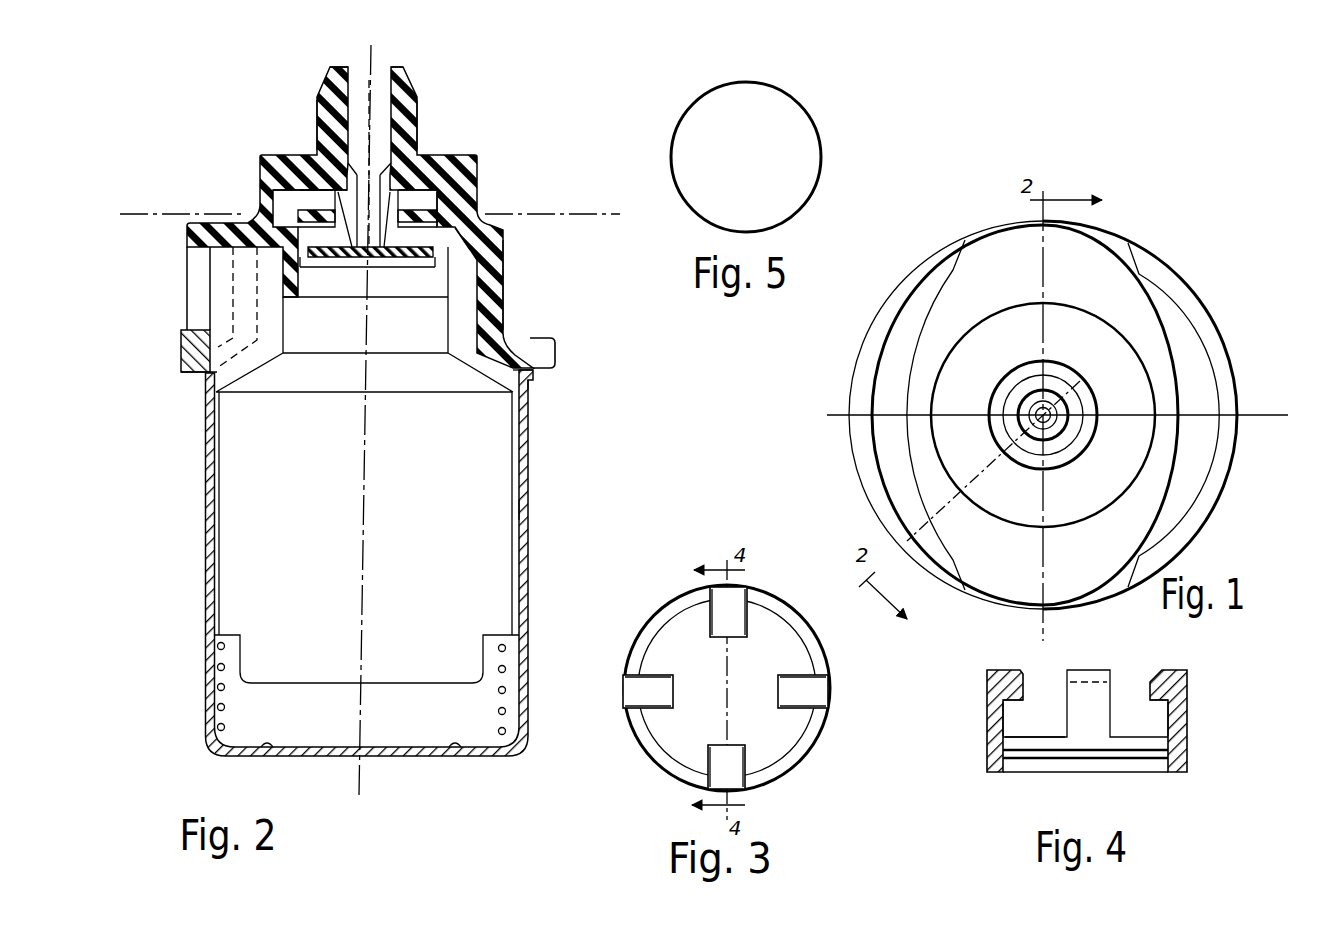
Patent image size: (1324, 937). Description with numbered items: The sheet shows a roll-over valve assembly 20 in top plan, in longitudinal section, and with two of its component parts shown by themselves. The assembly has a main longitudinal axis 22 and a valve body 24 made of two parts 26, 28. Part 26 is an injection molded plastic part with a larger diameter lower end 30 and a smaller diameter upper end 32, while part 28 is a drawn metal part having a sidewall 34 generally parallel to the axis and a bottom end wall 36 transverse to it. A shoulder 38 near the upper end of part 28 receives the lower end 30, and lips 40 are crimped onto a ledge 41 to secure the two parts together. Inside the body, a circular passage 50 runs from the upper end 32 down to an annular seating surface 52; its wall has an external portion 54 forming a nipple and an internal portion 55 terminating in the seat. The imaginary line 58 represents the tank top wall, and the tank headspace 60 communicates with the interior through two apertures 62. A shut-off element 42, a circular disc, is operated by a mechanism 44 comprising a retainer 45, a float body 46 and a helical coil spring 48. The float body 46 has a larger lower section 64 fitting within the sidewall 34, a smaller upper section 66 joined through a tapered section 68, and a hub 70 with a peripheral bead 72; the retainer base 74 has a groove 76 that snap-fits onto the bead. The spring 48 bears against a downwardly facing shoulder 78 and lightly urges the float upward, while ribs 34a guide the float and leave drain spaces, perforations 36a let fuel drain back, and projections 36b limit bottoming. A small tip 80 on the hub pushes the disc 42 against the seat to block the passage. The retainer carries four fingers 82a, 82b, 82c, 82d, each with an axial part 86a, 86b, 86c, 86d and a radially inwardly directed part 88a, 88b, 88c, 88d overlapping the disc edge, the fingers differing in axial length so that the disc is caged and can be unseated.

In FIG. 2, the roll-over valve assembly 20 is at (480, 150).
In FIG. 1, the roll-over valve assembly 20 is at (1218, 295).
In FIG. 2, the main longitudinal axis 22 is at (357, 773).
In FIG. 1, the main longitudinal axis 22 is at (1062, 432).
In FIG. 2, the valve body 24 is at (562, 368).
In FIG. 2, the plastic part 26 is at (505, 267).
In FIG. 2, the metal part 28 is at (528, 544).
In FIG. 2, the lower end 30 is at (177, 363).
In FIG. 2, the upper end 32 is at (407, 93).
In FIG. 1, the upper end 32 is at (1008, 378).
In FIG. 2, the sidewall 34 is at (528, 475).
In FIG. 2, the ribs 34a is at (515, 504).
In FIG. 2, the bottom end wall 36 is at (423, 757).
In FIG. 2, the perforations 36a is at (368, 757).
In FIG. 2, the internal projections 36b is at (263, 743).
In FIG. 2, the shoulder 38 is at (535, 380).
In FIG. 2, the lips 40 is at (548, 338).
In FIG. 1, the lips 40 is at (862, 362).
In FIG. 2, the ledge 41 is at (558, 352).
In FIG. 1, the ledge 41 is at (1112, 247).
In FIG. 2, the shut-off element 42 is at (330, 257).
In FIG. 5, the shut-off element 42 is at (818, 122).
In FIG. 2, the operating mechanism 44 is at (210, 561).
In FIG. 2, the retainer 45 is at (440, 256).
In FIG. 3, the retainer 45 is at (818, 745).
In FIG. 4, the retainer 45 is at (1192, 750).
In FIG. 2, the float body 46 is at (493, 452).
In FIG. 2, the helical coil spring 48 is at (203, 680).
In FIG. 2, the circular passage 50 is at (385, 118).
In FIG. 1, the circular passage 50 is at (1050, 410).
In FIG. 2, the seating surface 52 is at (386, 250).
In FIG. 2, the external portion 54 is at (327, 120).
In FIG. 2, the internal portion 55 is at (403, 200).
In FIG. 2, the top wall line 58 is at (150, 214).
In FIG. 2, the tank headspace 60 is at (182, 307).
In FIG. 2, the apertures 62 is at (197, 297).
In FIG. 2, the lower section 64 is at (235, 472).
In FIG. 2, the upper section 66 is at (408, 341).
In FIG. 2, the tapered section 68 is at (253, 381).
In FIG. 2, the hub 70 is at (338, 286).
In FIG. 2, the peripheral bead 72 is at (446, 273).
In FIG. 2, the base 74 is at (443, 291).
In FIG. 3, the base 74 is at (797, 612).
In FIG. 2, the internal circular groove 76 is at (305, 284).
In FIG. 4, the internal circular groove 76 is at (1030, 758).
In FIG. 2, the shoulder 78 is at (503, 630).
In FIG. 2, the tip 80 is at (350, 266).
In FIG. 2, the finger 82a is at (445, 196).
In FIG. 3, the finger 82a is at (812, 694).
In FIG. 3, the finger 82b is at (748, 628).
In FIG. 4, the finger 82b is at (1190, 696).
In FIG. 3, the finger 82c is at (745, 751).
In FIG. 4, the finger 82c is at (988, 696).
In FIG. 2, the finger 82d is at (282, 190).
In FIG. 3, the finger 82d is at (625, 699).
In FIG. 4, the finger 82d is at (1066, 718).
In FIG. 2, the axial part 86a is at (452, 242).
In FIG. 3, the axial part 86a is at (830, 682).
In FIG. 3, the axial part 86b is at (745, 590).
In FIG. 4, the axial part 86b is at (1178, 725).
In FIG. 3, the axial part 86c is at (745, 788).
In FIG. 4, the axial part 86c is at (995, 730).
In FIG. 2, the axial part 86d is at (247, 230).
In FIG. 3, the axial part 86d is at (622, 683).
In FIG. 4, the axial part 86d is at (1096, 720).
In FIG. 3, the radially inwardly directed part 88a is at (778, 690).
In FIG. 3, the radially inwardly directed part 88b is at (717, 637).
In FIG. 4, the radially inwardly directed part 88b is at (1170, 676).
In FIG. 3, the radially inwardly directed part 88c is at (717, 745).
In FIG. 4, the radially inwardly directed part 88c is at (1015, 680).
In FIG. 2, the radially inwardly directed part 88d is at (282, 158).
In FIG. 3, the radially inwardly directed part 88d is at (677, 693).